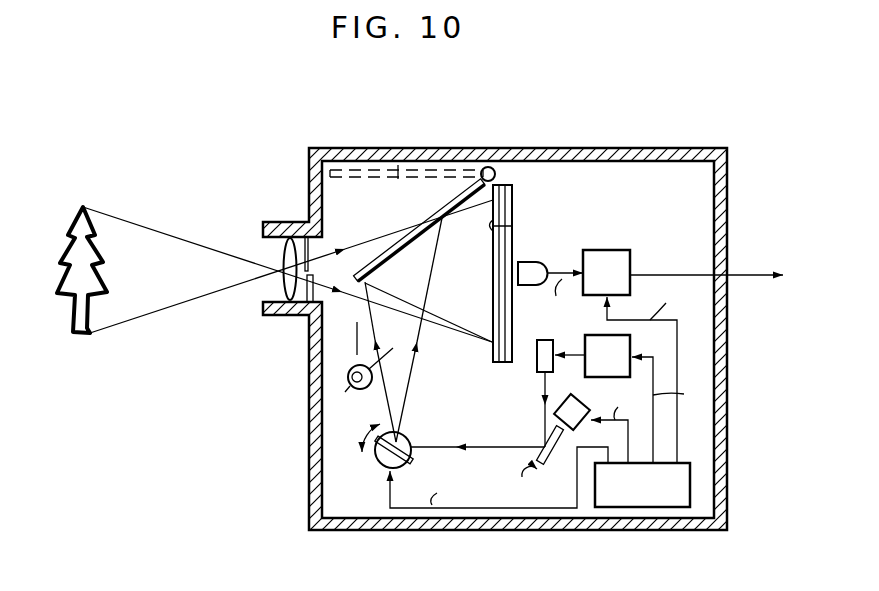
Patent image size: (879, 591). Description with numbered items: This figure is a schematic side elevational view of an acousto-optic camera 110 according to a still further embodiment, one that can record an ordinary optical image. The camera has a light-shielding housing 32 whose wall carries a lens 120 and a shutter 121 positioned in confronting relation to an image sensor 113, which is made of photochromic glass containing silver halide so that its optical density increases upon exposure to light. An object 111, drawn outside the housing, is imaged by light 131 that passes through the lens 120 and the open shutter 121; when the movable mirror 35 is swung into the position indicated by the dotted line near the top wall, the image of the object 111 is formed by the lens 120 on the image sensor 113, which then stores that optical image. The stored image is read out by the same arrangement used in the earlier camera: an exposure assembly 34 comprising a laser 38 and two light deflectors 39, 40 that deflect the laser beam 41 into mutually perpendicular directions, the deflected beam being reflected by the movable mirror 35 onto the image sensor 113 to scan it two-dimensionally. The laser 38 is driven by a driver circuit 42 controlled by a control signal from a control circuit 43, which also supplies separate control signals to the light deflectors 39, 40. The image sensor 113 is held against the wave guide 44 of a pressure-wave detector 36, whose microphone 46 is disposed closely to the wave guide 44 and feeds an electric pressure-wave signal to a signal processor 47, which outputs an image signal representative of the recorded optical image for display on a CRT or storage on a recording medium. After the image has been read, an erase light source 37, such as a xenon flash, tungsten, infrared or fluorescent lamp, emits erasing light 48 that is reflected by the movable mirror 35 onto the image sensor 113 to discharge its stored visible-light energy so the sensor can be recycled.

The acousto-optic camera 110 is at (637, 142).
The object 111 is at (108, 257).
The lens 120 is at (278, 260).
The shutter 121 is at (303, 243).
The light 131 is at (168, 234).
The light-shielding housing 32 is at (309, 415).
The exposure assembly 34 is at (507, 483).
The movable mirror 35 is at (407, 146).
The pressure-wave detector 36 is at (597, 232).
The erase light source 37 is at (348, 376).
The laser 38 is at (545, 340).
The light deflector 39 is at (536, 455).
The light deflector 40 is at (383, 468).
The laser beam 41 is at (543, 390).
The driver circuit 42 is at (607, 336).
The control circuit 43 is at (657, 498).
The wave guide 44 is at (505, 183).
The microphone 46 is at (532, 261).
The signal processor 47 is at (631, 250).
The erasing light 48 is at (357, 338).
The image sensor 113 is at (513, 226).